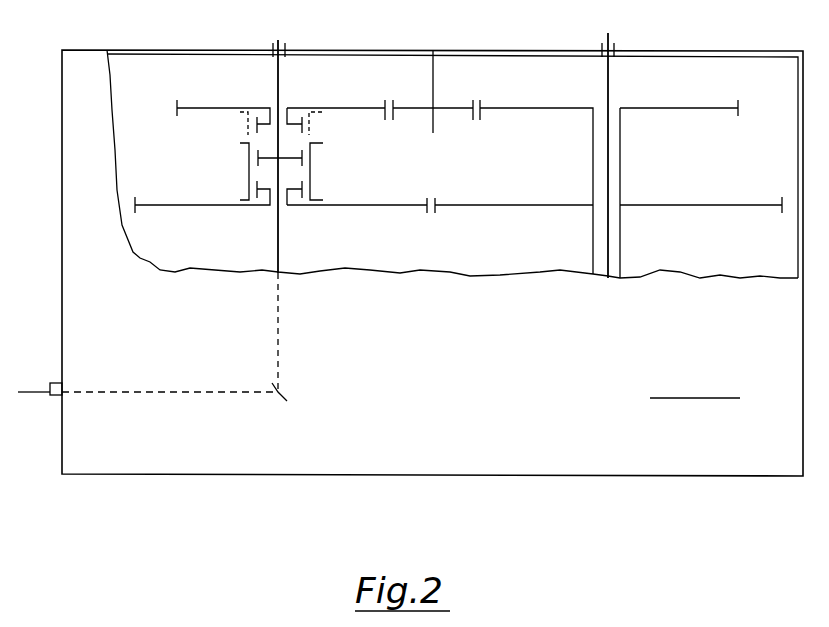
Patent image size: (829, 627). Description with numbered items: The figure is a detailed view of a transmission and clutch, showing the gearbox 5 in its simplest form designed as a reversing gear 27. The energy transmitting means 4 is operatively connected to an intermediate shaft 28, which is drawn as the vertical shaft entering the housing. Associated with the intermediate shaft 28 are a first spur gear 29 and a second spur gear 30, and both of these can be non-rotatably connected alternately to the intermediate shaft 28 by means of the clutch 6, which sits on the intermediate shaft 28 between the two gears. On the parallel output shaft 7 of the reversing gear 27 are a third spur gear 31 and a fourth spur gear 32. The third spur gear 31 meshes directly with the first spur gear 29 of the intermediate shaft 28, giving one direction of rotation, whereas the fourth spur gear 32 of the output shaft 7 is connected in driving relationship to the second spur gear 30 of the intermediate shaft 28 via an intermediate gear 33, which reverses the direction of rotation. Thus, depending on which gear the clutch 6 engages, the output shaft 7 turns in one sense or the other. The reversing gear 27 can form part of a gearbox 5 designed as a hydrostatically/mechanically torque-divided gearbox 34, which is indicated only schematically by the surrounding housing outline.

The energy transmitting means 4 is at (25, 392).
The gearbox 5 is at (432, 263).
The clutch 6 is at (226, 149).
The output shaft 7 is at (608, 77).
The reversing gear 27 is at (452, 225).
The intermediate shaft 28 is at (278, 244).
The first spur gear 29 is at (390, 206).
The second spur gear 30 is at (355, 108).
The third spur gear 31 is at (505, 206).
The fourth spur gear 32 is at (518, 108).
The intermediate gear 33 is at (452, 108).
The hydrostatically/mechanically torque-divided gearbox 34 is at (452, 227).